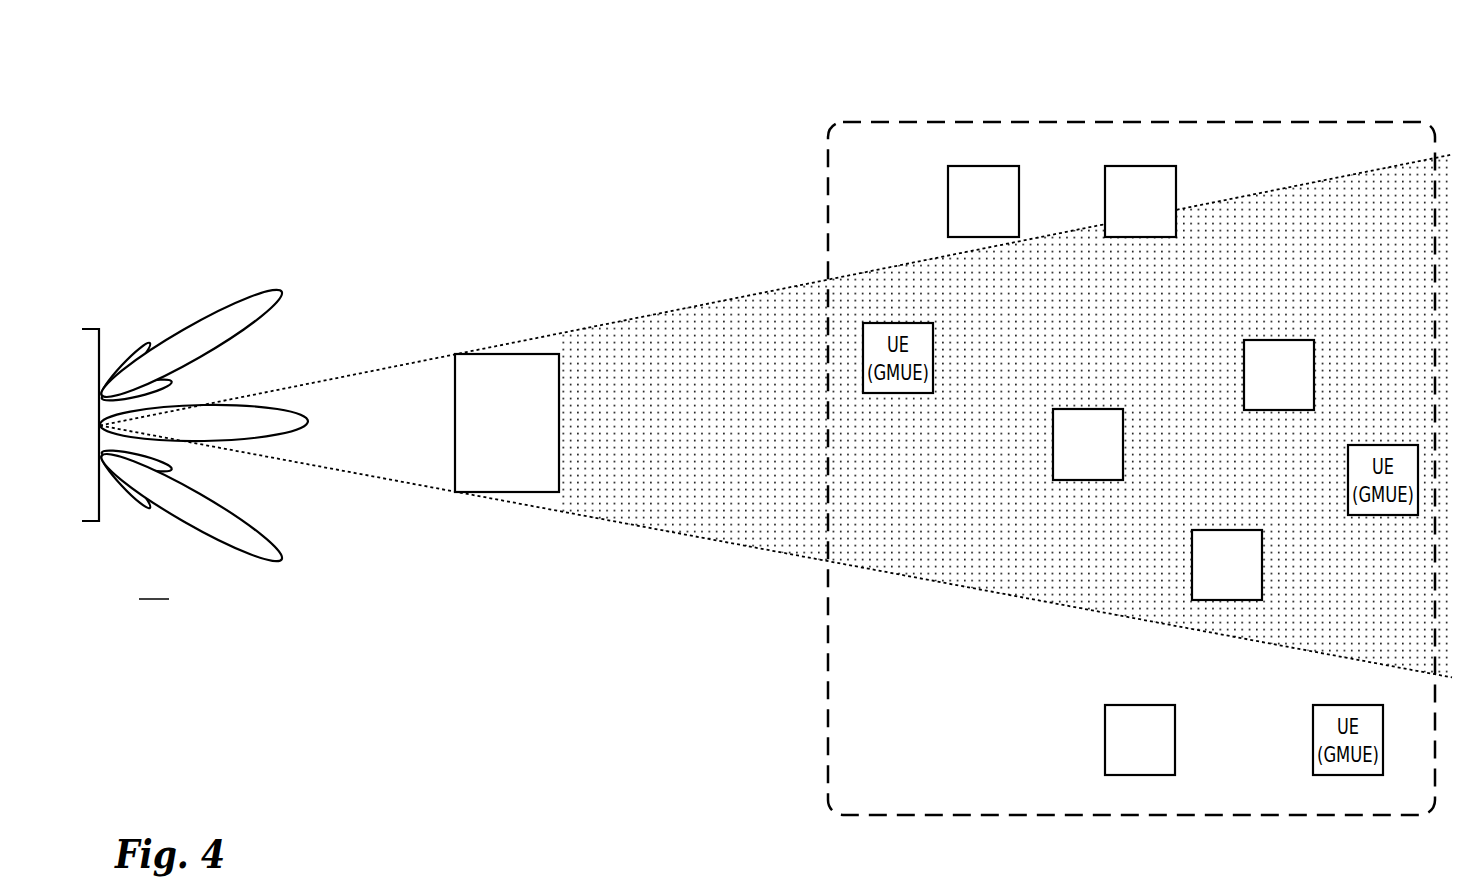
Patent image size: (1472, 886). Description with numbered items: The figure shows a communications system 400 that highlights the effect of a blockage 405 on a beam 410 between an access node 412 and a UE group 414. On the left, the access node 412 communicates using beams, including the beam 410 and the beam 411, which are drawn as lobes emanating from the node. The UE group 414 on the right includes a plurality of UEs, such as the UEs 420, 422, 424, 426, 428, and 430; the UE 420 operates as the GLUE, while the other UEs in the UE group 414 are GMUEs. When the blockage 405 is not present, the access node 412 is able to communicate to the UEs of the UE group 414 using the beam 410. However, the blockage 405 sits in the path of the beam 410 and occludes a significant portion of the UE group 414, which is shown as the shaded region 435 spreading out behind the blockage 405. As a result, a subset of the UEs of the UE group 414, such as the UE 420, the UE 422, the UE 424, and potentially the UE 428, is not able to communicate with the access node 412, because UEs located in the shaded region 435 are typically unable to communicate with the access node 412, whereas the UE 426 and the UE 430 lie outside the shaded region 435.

The communications system 400 is at (255, 58).
The blockage 405 is at (560, 406).
The beam 410 is at (264, 417).
The beam 411 is at (216, 314).
The access node 412 is at (125, 464).
The UE group 414 is at (935, 122).
The UE 420 is at (1088, 409).
The UE 422 is at (1227, 530).
The UE 424 is at (1278, 340).
The UE 426 is at (983, 166).
The UE 428 is at (1140, 166).
The UE 430 is at (1140, 705).
The shaded region 435 is at (687, 328).